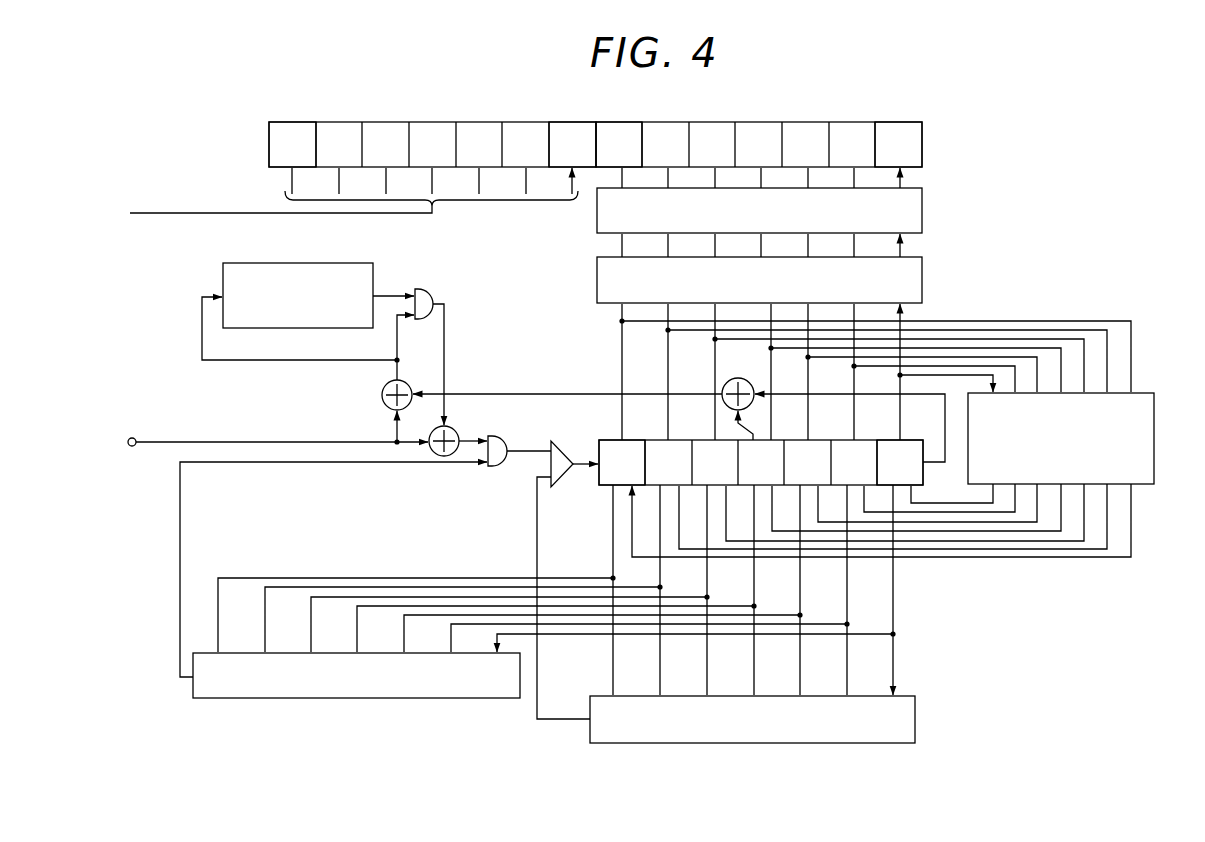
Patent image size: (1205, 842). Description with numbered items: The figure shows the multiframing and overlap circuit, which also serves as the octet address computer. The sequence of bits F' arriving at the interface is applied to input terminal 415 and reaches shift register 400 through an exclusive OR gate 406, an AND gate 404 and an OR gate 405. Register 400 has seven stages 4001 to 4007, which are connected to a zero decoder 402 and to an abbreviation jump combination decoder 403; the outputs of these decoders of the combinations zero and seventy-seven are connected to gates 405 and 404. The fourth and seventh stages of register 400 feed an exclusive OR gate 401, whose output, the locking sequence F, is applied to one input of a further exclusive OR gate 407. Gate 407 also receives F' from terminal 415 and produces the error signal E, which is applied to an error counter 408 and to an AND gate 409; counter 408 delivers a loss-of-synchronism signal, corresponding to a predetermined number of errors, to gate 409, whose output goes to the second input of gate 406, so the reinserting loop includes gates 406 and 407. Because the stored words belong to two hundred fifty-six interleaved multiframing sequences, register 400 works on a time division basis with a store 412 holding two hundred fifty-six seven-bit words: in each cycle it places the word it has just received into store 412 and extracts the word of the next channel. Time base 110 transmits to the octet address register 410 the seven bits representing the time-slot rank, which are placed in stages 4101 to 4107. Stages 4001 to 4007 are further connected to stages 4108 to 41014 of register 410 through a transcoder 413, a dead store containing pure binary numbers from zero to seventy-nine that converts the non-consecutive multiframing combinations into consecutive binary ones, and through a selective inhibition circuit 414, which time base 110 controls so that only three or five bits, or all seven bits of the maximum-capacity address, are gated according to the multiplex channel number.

The octet address register 410 is at (625, 133).
The first stage of octet address register 4101 is at (292, 144).
The seventh stage of octet address register 4107 is at (572, 144).
The eighth stage of octet address register 4108 is at (619, 144).
The fourteenth stage of octet address register 41014 is at (940, 108).
The selective inhibition circuit 414 is at (922, 208).
The transcoder 413 is at (922, 281).
The store 412 is at (1154, 461).
The exclusive OR gate 401 is at (740, 378).
The shift register 400 is at (750, 448).
The first stage of shift register 4001 is at (622, 462).
The seventh stage of shift register 4007 is at (900, 462).
The zero decoder 402 is at (915, 718).
The abbreviation jump combination decoder 403 is at (373, 698).
The AND gate 404 is at (498, 467).
The OR gate 405 is at (566, 480).
The exclusive OR gate 406 is at (455, 430).
The exclusive OR gate 407 is at (382, 392).
The error counter 408 is at (347, 256).
The AND gate 409 is at (430, 292).
The input terminal 415 is at (134, 438).
The time base 110 is at (205, 213).